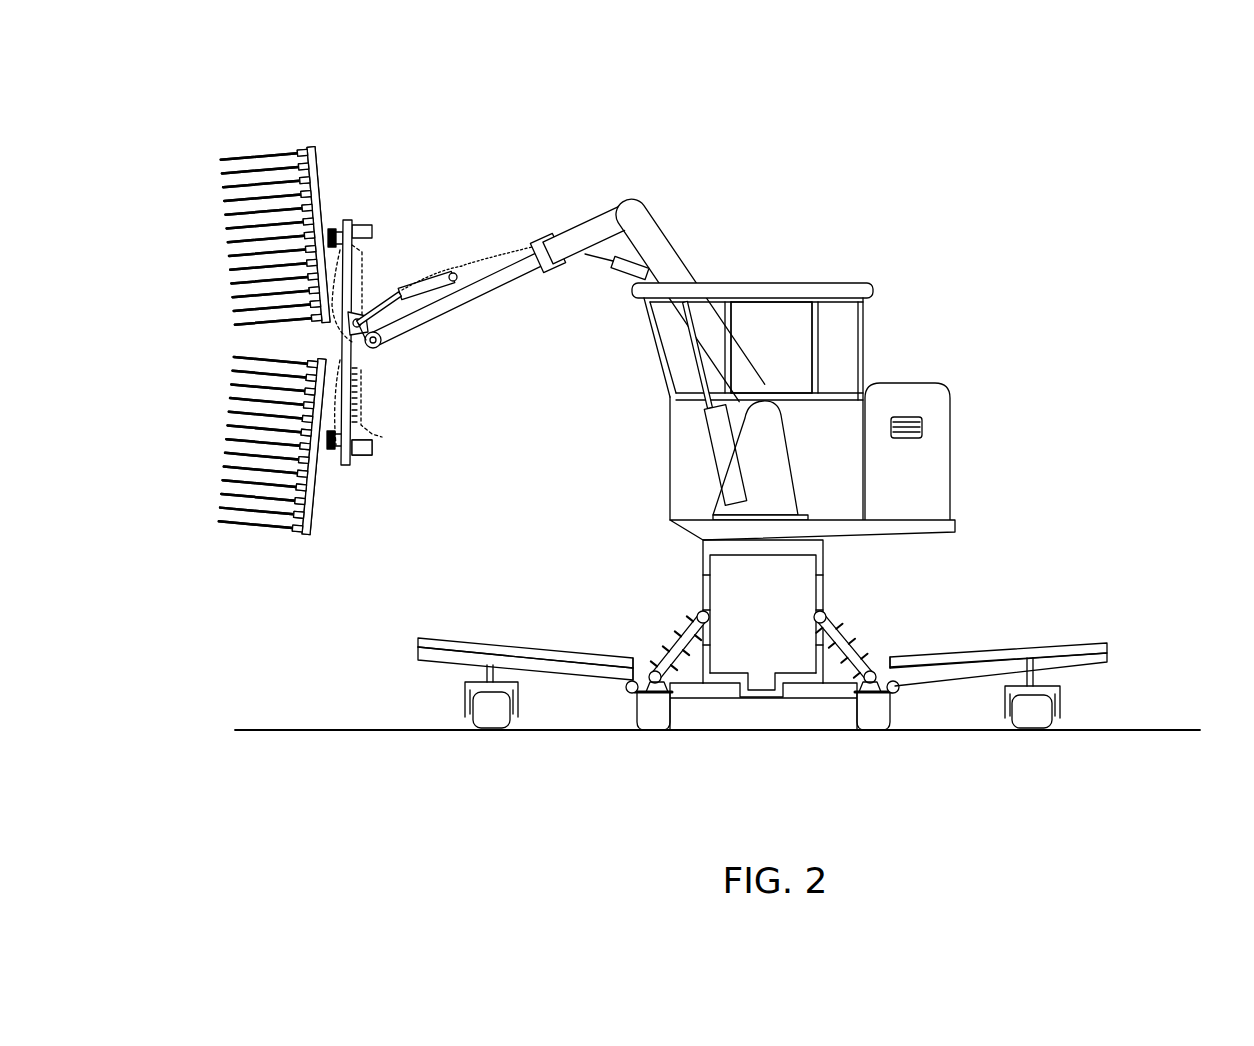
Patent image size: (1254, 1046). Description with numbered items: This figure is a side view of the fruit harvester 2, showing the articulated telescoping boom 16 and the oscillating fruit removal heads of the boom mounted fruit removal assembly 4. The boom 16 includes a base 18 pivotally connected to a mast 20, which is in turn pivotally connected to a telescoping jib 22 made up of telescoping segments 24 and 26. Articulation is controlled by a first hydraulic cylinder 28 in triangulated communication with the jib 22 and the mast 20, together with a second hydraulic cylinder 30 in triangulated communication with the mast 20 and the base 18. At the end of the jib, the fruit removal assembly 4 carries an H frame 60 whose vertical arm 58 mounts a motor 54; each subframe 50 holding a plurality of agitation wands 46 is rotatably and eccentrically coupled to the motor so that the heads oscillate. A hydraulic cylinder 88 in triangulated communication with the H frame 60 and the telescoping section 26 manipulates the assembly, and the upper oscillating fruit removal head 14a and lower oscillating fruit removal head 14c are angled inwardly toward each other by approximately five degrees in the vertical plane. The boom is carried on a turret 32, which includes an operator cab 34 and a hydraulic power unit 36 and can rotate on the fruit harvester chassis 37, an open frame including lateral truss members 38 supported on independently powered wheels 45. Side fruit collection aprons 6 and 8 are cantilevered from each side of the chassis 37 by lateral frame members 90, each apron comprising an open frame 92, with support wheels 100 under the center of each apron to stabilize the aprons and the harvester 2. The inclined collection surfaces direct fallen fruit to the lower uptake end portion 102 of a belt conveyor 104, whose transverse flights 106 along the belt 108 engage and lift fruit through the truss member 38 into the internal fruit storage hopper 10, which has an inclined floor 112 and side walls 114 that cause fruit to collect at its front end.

The fruit harvester 2 is at (895, 122).
The fruit removal assembly 4 is at (212, 343).
The side fruit collection apron 6 is at (468, 625).
The side fruit collection apron 8 is at (1082, 615).
The internal fruit storage hopper 10 is at (770, 589).
The first upper oscillating fruit removal head 14a is at (270, 100).
The first lower oscillating fruit removal head 14c is at (270, 540).
The articulated telescoping boom 16 is at (680, 162).
The base 18 is at (752, 476).
The mast 20 is at (668, 240).
The telescoping jib 22 is at (547, 238).
The telescoping segment 24 is at (553, 243).
The telescoping segment 26 is at (428, 328).
The first hydraulic cylinder 28 is at (622, 275).
The second hydraulic cylinder 30 is at (705, 420).
The turret 32 is at (905, 282).
The operator cab 34 is at (795, 350).
The hydraulic power unit 36 is at (920, 467).
The fruit harvester chassis 37 is at (845, 575).
The lateral truss member 38 is at (700, 565).
The wheel 45 is at (632, 700).
The agitation wand 46 is at (222, 175).
The subframe 50 is at (332, 168).
The motor 54 is at (360, 462).
The vertical arm 58 is at (362, 370).
The H frame 60 is at (390, 415).
The hydraulic cylinder 88 is at (408, 285).
The lateral frame member 90 is at (548, 672).
The open frame 92 is at (1108, 655).
The support wheel 100 is at (480, 720).
The lower uptake end portion 102 is at (632, 683).
The belt conveyor 104 is at (632, 626).
The transverse flight 106 is at (690, 615).
The belt 108 is at (700, 600).
The inclined floor 112 is at (723, 675).
The side wall 114 is at (695, 675).